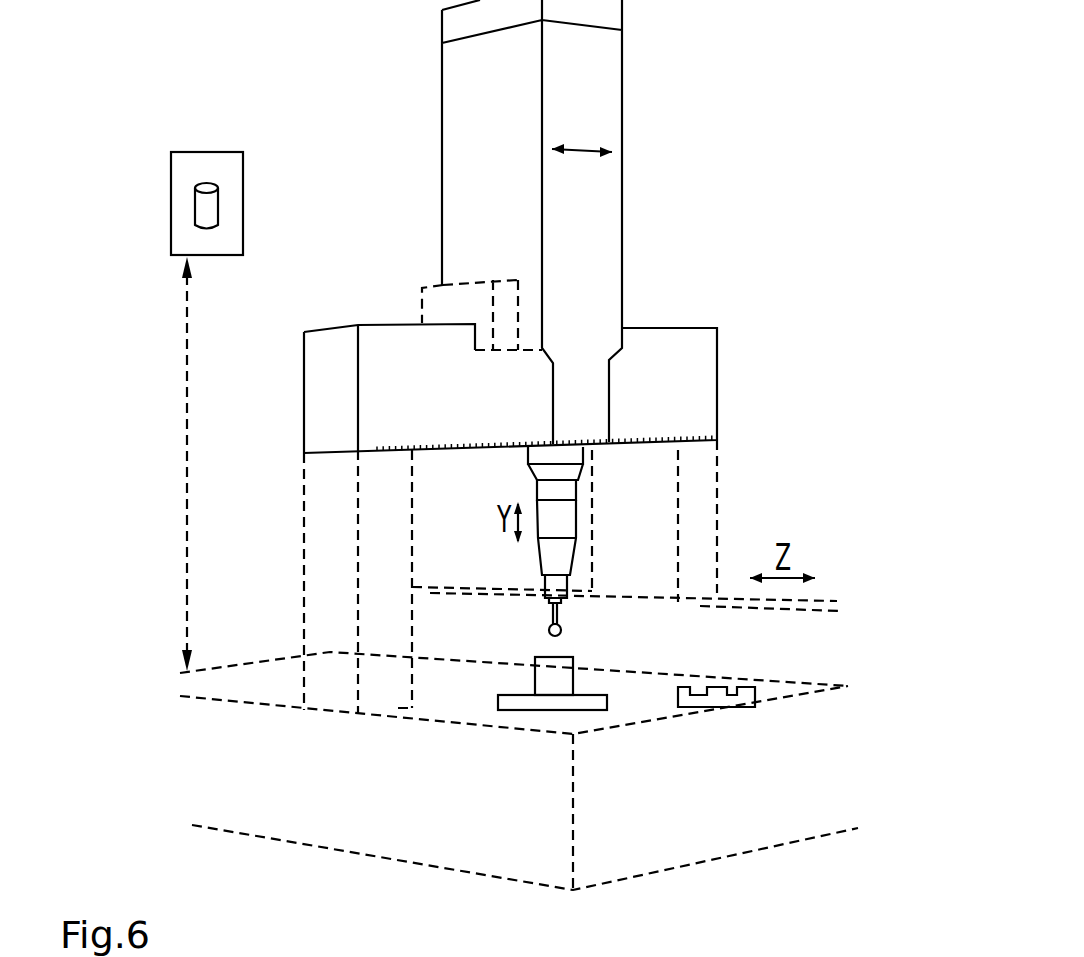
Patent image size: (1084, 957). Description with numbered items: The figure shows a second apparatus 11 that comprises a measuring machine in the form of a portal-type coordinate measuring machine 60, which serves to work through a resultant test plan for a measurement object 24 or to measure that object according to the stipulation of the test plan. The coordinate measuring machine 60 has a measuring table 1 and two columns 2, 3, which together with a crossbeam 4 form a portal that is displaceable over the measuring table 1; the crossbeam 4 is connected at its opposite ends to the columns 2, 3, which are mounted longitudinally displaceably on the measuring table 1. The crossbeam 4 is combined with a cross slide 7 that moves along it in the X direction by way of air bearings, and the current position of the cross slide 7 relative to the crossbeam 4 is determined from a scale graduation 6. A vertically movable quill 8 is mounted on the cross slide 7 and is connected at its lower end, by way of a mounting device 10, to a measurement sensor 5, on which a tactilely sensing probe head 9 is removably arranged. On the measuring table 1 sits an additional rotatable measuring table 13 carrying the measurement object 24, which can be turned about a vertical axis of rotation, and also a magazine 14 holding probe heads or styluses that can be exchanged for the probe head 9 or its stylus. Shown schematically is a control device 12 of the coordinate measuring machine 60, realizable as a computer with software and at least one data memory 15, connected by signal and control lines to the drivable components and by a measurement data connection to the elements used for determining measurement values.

The measuring table 1 is at (235, 667).
The column 2 is at (718, 532).
The column 3 is at (305, 548).
The crossbeam 4 is at (330, 327).
The measurement sensor 5 is at (537, 538).
The scale graduation 6 is at (653, 443).
The cross slide 7 is at (442, 100).
The quill 8 is at (568, 452).
The probe head 9 is at (557, 585).
The mounting device 10 is at (537, 500).
The second apparatus 11 is at (287, 865).
The control device 12 is at (243, 255).
The rotatable measuring table 13 is at (520, 712).
The magazine 14 is at (714, 708).
The data memory 15 is at (205, 183).
The measurement object 24 is at (592, 680).
The coordinate measuring machine 60 is at (757, 219).